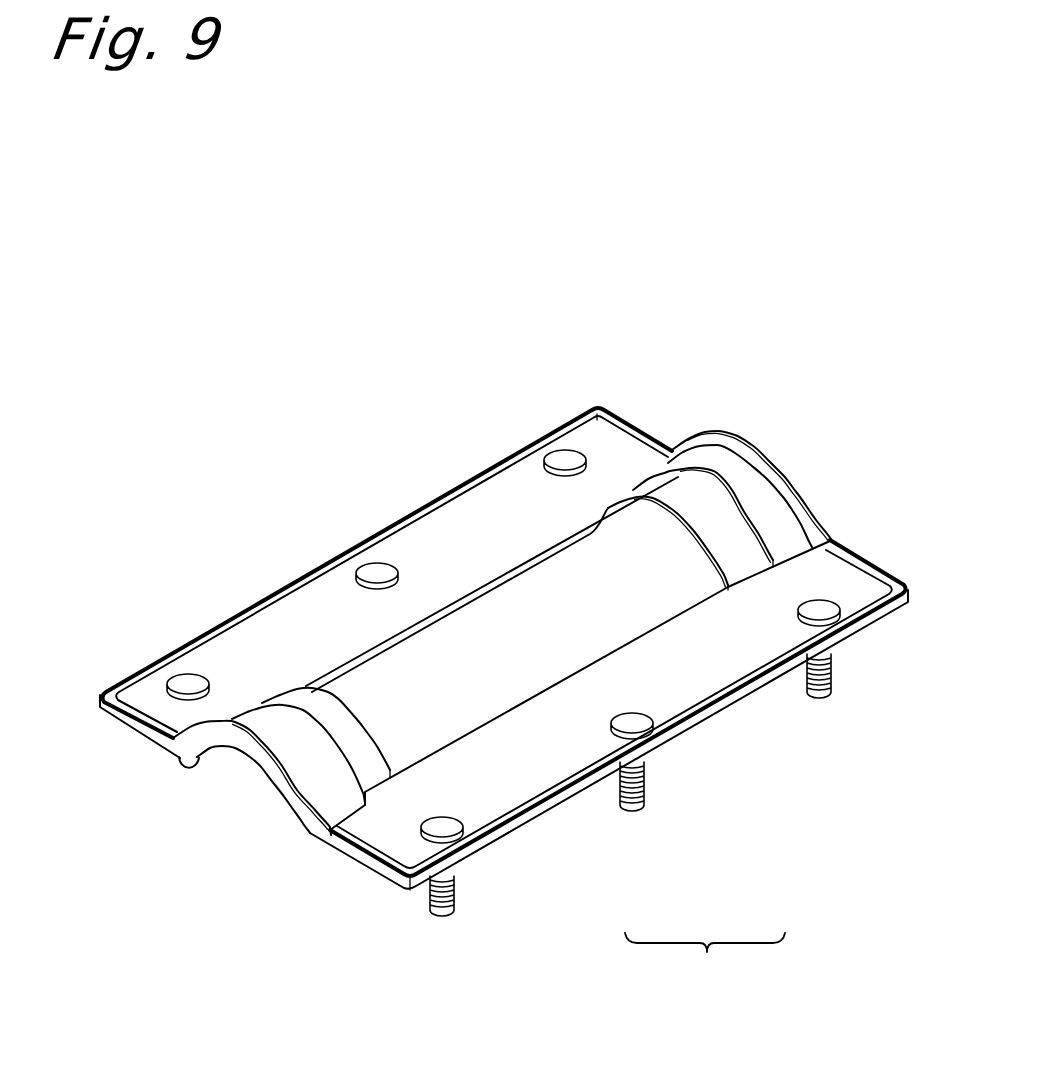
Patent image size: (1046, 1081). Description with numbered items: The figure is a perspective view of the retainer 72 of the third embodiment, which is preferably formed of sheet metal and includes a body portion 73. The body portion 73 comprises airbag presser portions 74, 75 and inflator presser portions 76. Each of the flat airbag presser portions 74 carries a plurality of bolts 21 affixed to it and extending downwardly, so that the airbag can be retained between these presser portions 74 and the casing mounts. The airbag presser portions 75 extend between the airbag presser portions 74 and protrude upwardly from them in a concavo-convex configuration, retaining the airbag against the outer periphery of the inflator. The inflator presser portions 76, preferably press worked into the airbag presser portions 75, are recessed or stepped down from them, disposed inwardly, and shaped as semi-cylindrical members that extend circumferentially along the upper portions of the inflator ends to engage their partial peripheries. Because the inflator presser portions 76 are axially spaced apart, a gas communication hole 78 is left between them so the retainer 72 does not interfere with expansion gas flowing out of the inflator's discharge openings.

The bolt 21 is at (567, 457).
The retainer 72 is at (705, 963).
The body portion 73 is at (685, 687).
The airbag presser portion 74 is at (427, 540).
The airbag presser portion 75 is at (722, 475).
The inflator presser portion 76 is at (685, 493).
The gas communication hole 78 is at (520, 593).